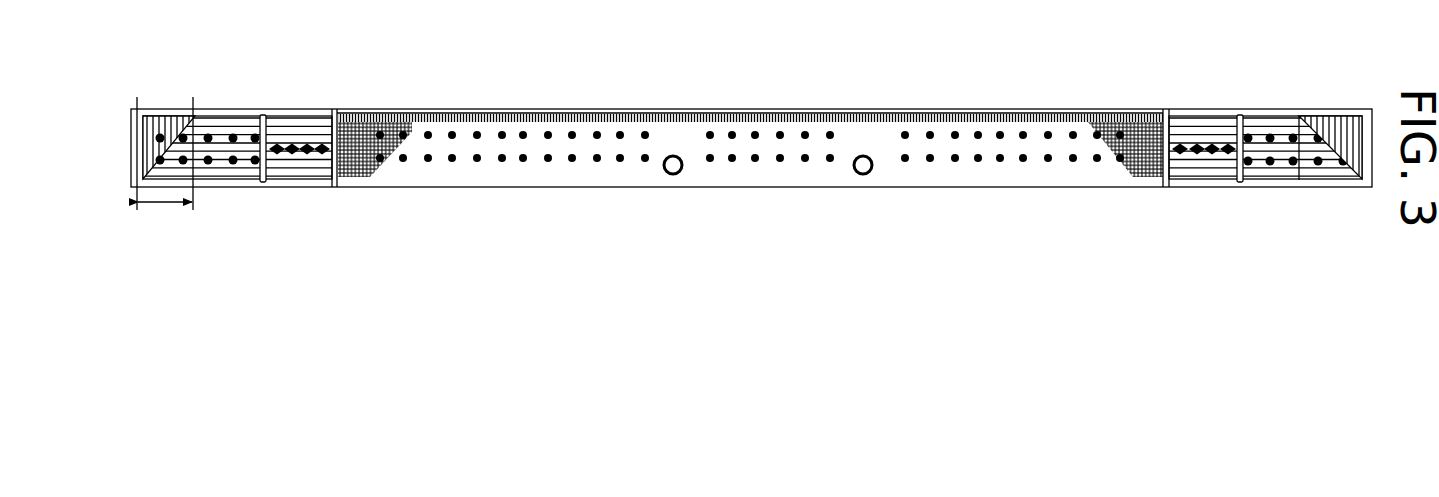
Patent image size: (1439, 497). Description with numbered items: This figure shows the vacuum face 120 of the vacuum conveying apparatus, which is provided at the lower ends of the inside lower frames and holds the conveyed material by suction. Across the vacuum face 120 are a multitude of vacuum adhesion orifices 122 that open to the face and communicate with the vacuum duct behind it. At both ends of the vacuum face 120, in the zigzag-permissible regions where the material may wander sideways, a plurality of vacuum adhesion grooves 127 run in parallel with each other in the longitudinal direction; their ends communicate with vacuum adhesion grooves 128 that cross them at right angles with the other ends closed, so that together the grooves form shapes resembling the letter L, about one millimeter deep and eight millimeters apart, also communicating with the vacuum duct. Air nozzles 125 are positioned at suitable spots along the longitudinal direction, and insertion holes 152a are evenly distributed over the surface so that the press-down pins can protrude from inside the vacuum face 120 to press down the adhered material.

The vacuum face 120 is at (772, 108).
The vacuum adhesion orifices 122 is at (1142, 167).
The air nozzles 125 is at (674, 172).
The vacuum adhesion grooves 127 is at (218, 133).
The vacuum adhesion grooves 128 is at (180, 115).
The insertion hole 152a is at (402, 123).